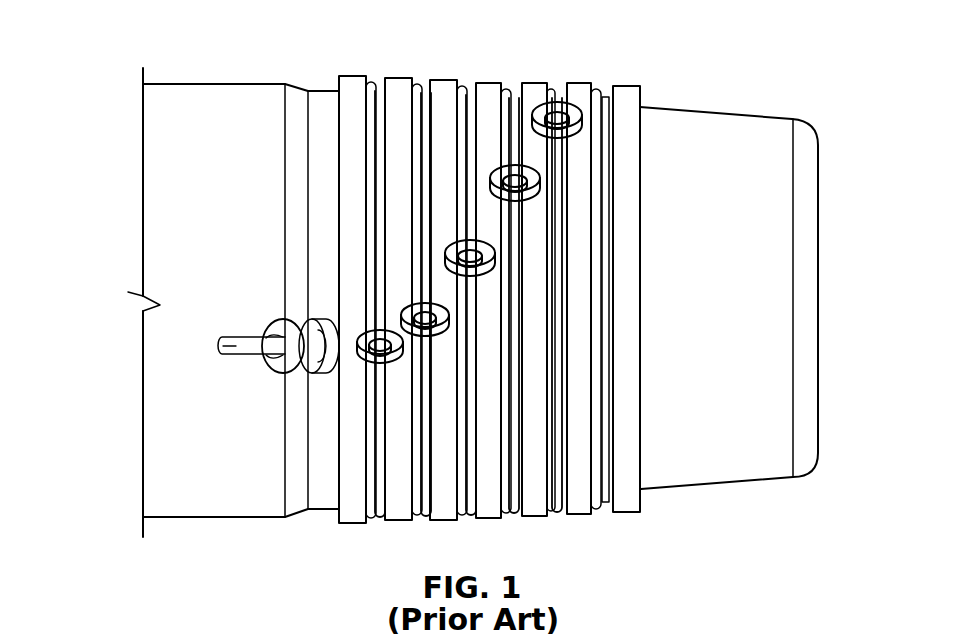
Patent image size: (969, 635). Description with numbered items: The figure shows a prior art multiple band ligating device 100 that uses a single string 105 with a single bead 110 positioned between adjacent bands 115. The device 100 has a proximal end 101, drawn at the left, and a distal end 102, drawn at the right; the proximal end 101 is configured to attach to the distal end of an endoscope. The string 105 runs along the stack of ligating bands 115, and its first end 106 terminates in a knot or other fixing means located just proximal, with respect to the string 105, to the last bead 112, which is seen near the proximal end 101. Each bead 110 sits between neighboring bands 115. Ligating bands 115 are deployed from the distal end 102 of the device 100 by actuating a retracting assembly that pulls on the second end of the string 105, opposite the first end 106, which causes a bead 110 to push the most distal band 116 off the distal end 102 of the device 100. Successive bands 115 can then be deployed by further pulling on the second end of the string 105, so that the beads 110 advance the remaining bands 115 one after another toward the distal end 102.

The multiple band ligating device 100 is at (156, 46).
The proximal end 101 is at (185, 125).
The distal end 102 is at (772, 326).
The string 105 is at (373, 177).
The first end of the string 106 is at (202, 347).
The bead 110 is at (570, 105).
The last bead 112 is at (323, 375).
The ligating bands 115 is at (583, 502).
The most distal band 116 is at (628, 477).